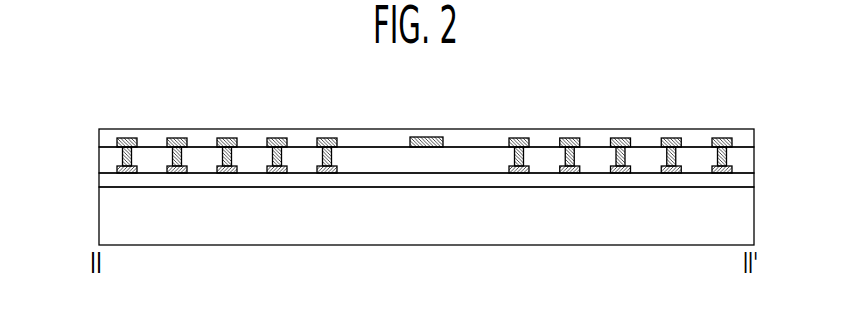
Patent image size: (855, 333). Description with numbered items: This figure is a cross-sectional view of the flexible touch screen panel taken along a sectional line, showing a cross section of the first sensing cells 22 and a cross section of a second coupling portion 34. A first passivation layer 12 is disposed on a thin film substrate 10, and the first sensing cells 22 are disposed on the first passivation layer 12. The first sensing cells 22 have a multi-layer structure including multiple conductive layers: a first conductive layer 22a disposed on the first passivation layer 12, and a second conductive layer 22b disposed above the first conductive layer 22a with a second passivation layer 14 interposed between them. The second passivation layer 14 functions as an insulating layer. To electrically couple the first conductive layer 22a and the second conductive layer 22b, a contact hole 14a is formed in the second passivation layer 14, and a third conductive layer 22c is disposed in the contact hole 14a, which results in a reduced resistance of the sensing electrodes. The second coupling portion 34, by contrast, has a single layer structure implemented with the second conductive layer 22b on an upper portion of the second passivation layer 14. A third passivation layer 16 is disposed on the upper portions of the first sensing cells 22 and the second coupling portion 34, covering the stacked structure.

The thin film substrate 10 is at (747, 220).
The first passivation layer 12 is at (747, 183).
The second passivation layer 14 is at (747, 164).
The contact hole 14a is at (131, 155).
The third passivation layer 16 is at (747, 139).
The first sensing cells 22 is at (75, 159).
The first conductive layer 22a is at (117, 171).
The second conductive layer 22b is at (117, 141).
The third conductive layer 22c is at (122, 157).
The second coupling portion 34 is at (425, 147).